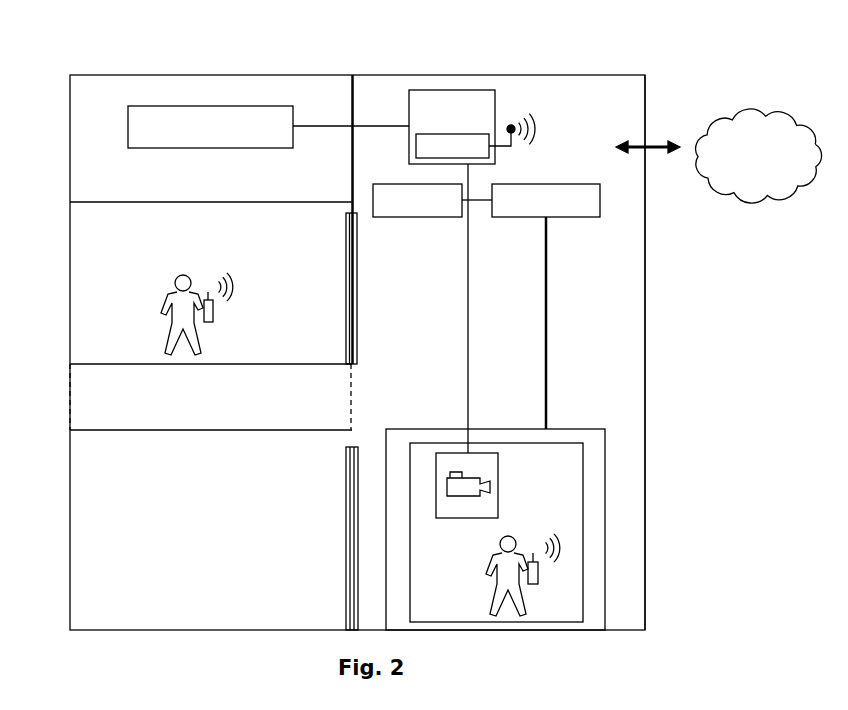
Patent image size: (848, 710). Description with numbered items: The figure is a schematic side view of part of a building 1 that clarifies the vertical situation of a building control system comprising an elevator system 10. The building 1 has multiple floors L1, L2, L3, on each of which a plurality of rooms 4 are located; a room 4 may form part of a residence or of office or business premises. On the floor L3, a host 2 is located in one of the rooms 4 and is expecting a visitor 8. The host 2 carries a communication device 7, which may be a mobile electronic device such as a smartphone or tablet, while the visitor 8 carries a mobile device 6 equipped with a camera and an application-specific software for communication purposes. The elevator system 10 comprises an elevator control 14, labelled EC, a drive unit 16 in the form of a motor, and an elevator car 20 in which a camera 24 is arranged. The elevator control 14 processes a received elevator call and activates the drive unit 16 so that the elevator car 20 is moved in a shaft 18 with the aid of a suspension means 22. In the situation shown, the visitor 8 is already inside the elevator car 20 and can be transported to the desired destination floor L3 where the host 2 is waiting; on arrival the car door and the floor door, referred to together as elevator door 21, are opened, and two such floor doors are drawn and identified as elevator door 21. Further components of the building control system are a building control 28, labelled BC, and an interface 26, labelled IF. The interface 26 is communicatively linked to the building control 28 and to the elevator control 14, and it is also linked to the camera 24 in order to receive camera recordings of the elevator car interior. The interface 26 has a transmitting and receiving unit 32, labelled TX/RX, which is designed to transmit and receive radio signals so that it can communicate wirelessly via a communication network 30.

The building 1 is at (87, 75).
The host 2 is at (193, 292).
The room 4 is at (114, 240).
The mobile device 6 is at (540, 572).
The communication device 7 is at (214, 312).
The visitor 8 is at (515, 550).
The elevator system 10 is at (586, 126).
The elevator control 14 is at (427, 220).
The drive unit 16 is at (590, 220).
The shaft 18 is at (521, 308).
The elevator car 20 is at (605, 585).
The elevator door 21 is at (345, 253).
The suspension means 22 is at (549, 368).
The camera 24 is at (439, 450).
The interface 26 is at (407, 103).
The building control 28 is at (273, 106).
The communication network 30 is at (778, 114).
The transmitting and receiving unit 32 is at (414, 149).
The floor L1 is at (83, 515).
The floor L2 is at (112, 398).
The floor L3 is at (92, 314).